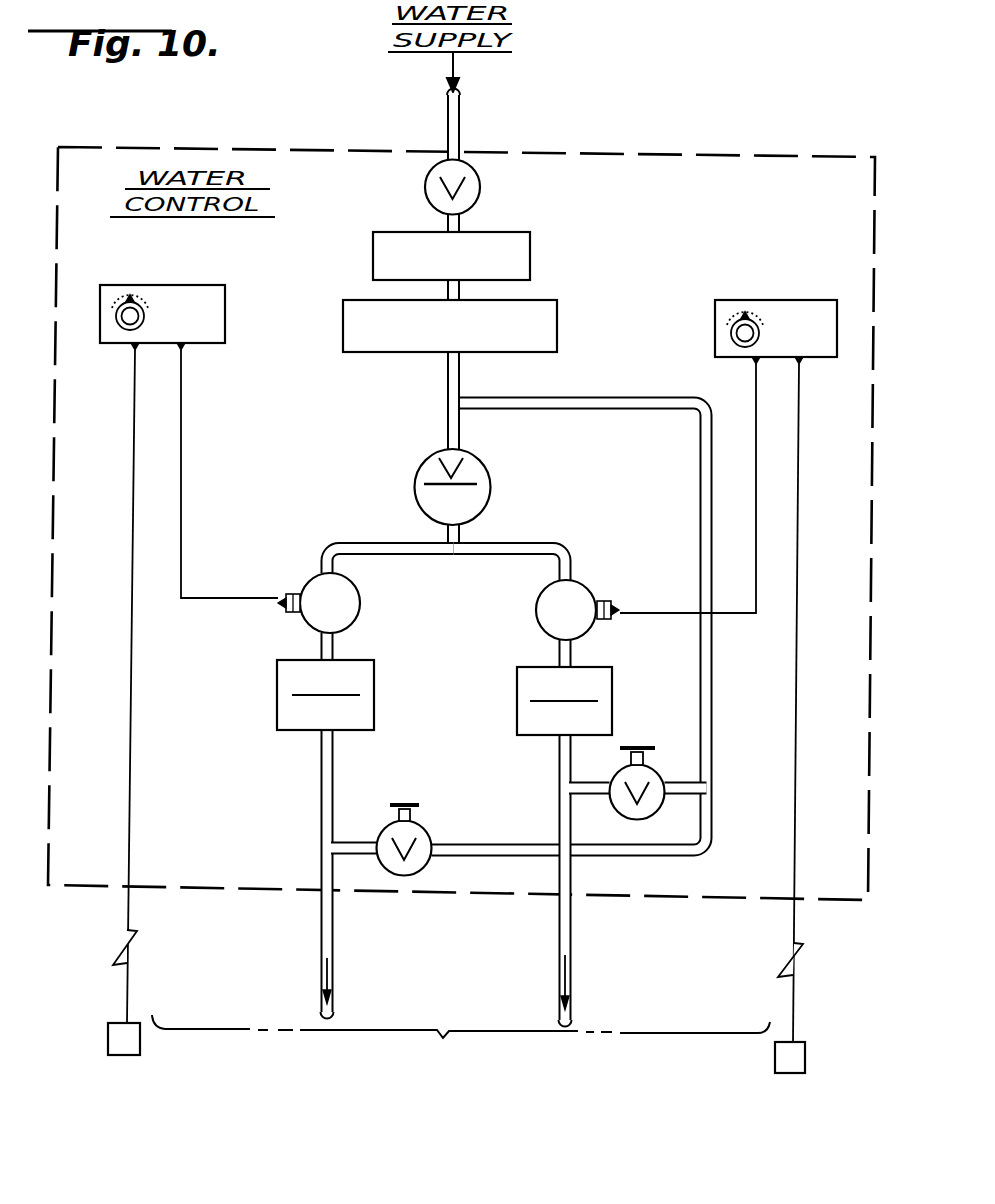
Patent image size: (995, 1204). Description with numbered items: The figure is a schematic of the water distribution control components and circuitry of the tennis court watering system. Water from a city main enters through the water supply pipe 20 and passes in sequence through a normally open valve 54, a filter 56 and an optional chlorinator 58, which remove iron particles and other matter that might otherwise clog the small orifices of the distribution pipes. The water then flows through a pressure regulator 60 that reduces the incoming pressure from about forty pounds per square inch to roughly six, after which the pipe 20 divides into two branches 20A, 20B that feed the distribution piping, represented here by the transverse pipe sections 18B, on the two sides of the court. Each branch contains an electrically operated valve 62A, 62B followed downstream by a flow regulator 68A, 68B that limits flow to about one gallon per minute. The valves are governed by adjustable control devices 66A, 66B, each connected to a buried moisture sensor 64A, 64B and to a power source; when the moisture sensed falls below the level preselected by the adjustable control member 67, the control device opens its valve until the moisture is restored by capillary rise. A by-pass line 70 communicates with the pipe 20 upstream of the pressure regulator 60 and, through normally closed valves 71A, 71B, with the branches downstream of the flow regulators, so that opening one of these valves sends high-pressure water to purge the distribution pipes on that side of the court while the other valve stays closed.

The water supply pipe 20 is at (461, 118).
The branch 20A is at (376, 543).
The branch 20B is at (560, 544).
The normally open valve 54 is at (480, 191).
The filter 56 is at (530, 270).
The chlorinator 58 is at (557, 320).
The pressure regulator 60 is at (485, 478).
The electrically operated valve 62A is at (350, 590).
The electrically operated valve 62B is at (542, 596).
The moisture sensor 64A is at (140, 1043).
The moisture sensor 64B is at (775, 1060).
The adjustable control device 66A is at (189, 296).
The adjustable control device 66B is at (794, 305).
The adjustable control member 67 is at (136, 304).
The flow regulator 68A is at (280, 666).
The flow regulator 68B is at (612, 673).
The by-pass line 70 is at (606, 402).
The valve 71A is at (420, 830).
The valve 71B is at (651, 778).
The pipe sections 18B is at (320, 930).